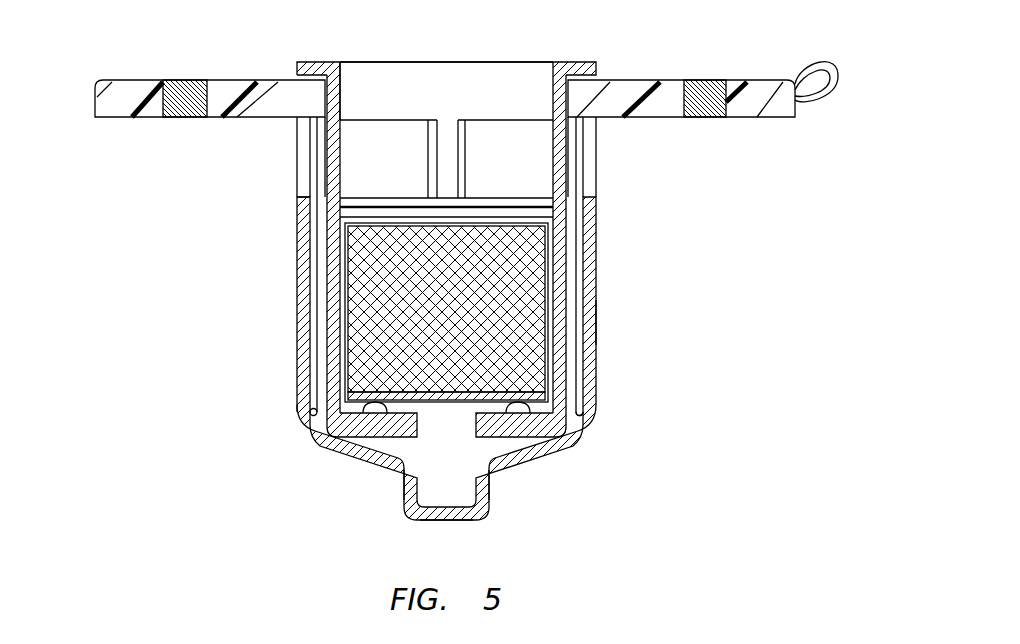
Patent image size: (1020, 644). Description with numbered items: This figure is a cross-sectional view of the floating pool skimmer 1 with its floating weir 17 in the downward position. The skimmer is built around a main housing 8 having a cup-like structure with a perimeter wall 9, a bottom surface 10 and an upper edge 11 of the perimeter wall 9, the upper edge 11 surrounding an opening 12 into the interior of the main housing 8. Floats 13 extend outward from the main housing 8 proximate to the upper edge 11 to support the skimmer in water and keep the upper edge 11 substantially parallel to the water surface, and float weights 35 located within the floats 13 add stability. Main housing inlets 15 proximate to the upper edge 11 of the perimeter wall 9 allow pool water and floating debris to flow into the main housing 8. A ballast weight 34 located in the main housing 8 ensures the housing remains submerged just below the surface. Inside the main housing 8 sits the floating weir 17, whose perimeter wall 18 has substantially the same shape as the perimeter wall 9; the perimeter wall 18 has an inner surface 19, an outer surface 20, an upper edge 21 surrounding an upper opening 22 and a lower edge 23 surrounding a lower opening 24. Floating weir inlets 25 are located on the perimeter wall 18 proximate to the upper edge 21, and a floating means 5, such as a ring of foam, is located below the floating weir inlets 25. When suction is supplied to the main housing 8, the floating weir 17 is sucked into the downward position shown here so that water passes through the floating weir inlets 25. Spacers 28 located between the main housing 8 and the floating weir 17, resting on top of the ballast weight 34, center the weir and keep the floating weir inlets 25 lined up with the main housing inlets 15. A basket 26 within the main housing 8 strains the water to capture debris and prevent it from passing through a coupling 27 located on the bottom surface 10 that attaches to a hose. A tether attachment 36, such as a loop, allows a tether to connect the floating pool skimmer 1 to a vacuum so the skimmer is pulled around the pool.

The floating pool skimmer 1 is at (732, 226).
The floating means 5 is at (533, 203).
The main housing 8 is at (596, 365).
The perimeter wall 9 is at (596, 320).
The bottom surface 10 is at (528, 460).
The upper edge 11 is at (595, 117).
The opening 12 is at (310, 197).
The float 13 is at (672, 80).
The main housing inlet 15 is at (596, 165).
The floating weir 17 is at (508, 62).
The perimeter wall 18 is at (327, 250).
The inner surface 19 is at (380, 97).
The outer surface 20 is at (567, 252).
The upper edge 21 is at (580, 63).
The upper opening 22 is at (427, 62).
The lower edge 23 is at (317, 423).
The lower opening 24 is at (578, 422).
The floating weir inlet 25 is at (465, 147).
The basket 26 is at (508, 315).
The coupling 27 is at (450, 521).
The spacer 28 is at (518, 405).
The ballast weight 34 is at (490, 423).
The float weight 35 is at (710, 103).
The tether attachment 36 is at (817, 58).